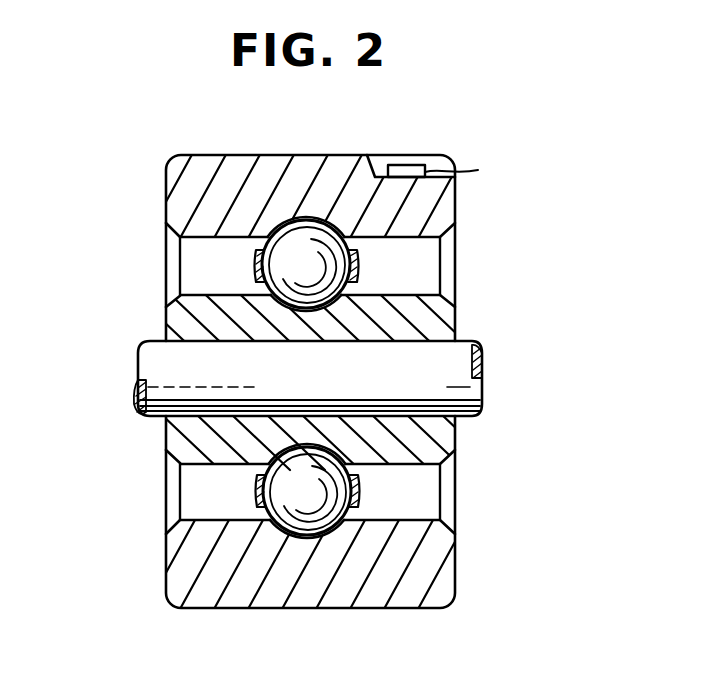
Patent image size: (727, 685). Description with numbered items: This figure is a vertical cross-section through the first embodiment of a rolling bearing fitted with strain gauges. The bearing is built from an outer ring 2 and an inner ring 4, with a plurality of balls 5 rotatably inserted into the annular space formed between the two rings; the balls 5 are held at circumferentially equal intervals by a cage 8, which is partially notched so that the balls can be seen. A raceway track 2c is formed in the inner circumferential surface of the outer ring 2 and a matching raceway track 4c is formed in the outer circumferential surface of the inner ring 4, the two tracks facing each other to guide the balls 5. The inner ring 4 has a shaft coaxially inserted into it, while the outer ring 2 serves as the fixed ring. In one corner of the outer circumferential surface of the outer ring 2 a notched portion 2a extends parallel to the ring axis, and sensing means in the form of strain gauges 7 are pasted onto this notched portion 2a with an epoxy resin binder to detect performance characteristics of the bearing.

The outer ring 2 is at (363, 358).
The notched portion 2a is at (375, 177).
The raceway track 2c is at (300, 214).
The inner ring 4 is at (337, 375).
The raceway track 4c is at (285, 318).
The balls 5 is at (362, 266).
The strain gauges 7 is at (407, 165).
The cage 8 is at (256, 268).